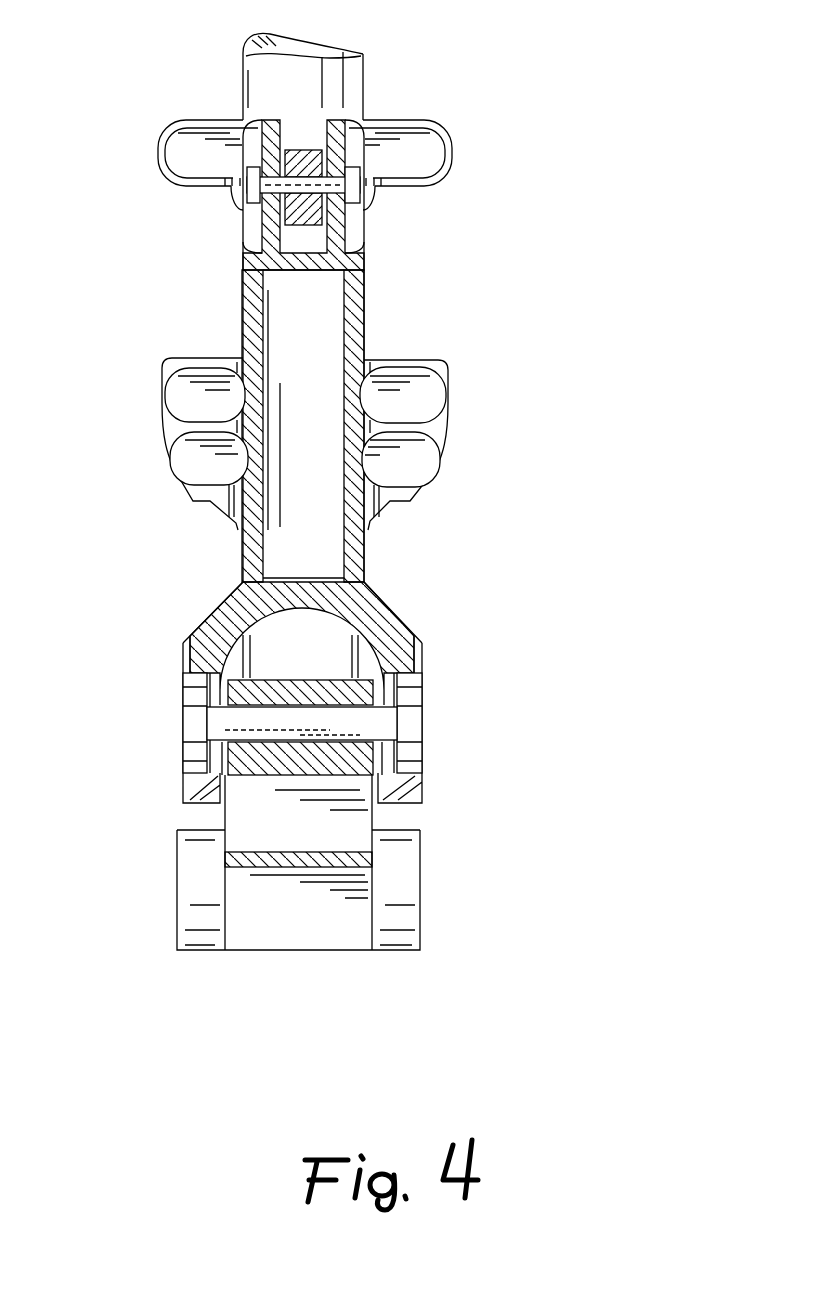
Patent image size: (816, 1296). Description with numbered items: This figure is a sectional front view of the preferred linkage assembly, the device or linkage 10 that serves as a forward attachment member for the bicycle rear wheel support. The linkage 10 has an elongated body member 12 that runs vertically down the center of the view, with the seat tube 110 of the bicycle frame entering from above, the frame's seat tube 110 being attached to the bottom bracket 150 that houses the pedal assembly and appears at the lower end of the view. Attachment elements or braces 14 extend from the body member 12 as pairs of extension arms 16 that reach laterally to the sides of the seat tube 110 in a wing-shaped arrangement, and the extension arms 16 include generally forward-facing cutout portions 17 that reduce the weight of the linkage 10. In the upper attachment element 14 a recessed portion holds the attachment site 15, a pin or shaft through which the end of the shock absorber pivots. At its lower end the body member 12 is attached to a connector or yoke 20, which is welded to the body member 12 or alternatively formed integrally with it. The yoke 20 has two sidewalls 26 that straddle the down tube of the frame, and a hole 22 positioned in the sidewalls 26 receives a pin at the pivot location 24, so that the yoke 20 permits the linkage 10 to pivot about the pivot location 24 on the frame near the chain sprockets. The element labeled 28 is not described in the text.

The linkage 10 is at (578, 243).
The elongated body member 12 is at (364, 318).
The attachment element 14 is at (190, 120).
The attachment site 15 is at (373, 190).
The extension arms 16 is at (158, 148).
The cutout portions 17 is at (207, 158).
The yoke 20 is at (387, 597).
The hole 22 is at (182, 680).
The pivot location 24 is at (188, 722).
The sidewalls 26 is at (182, 655).
The tube 28 is at (330, 727).
The seat tube 110 is at (364, 70).
The bottom bracket 150 is at (420, 913).